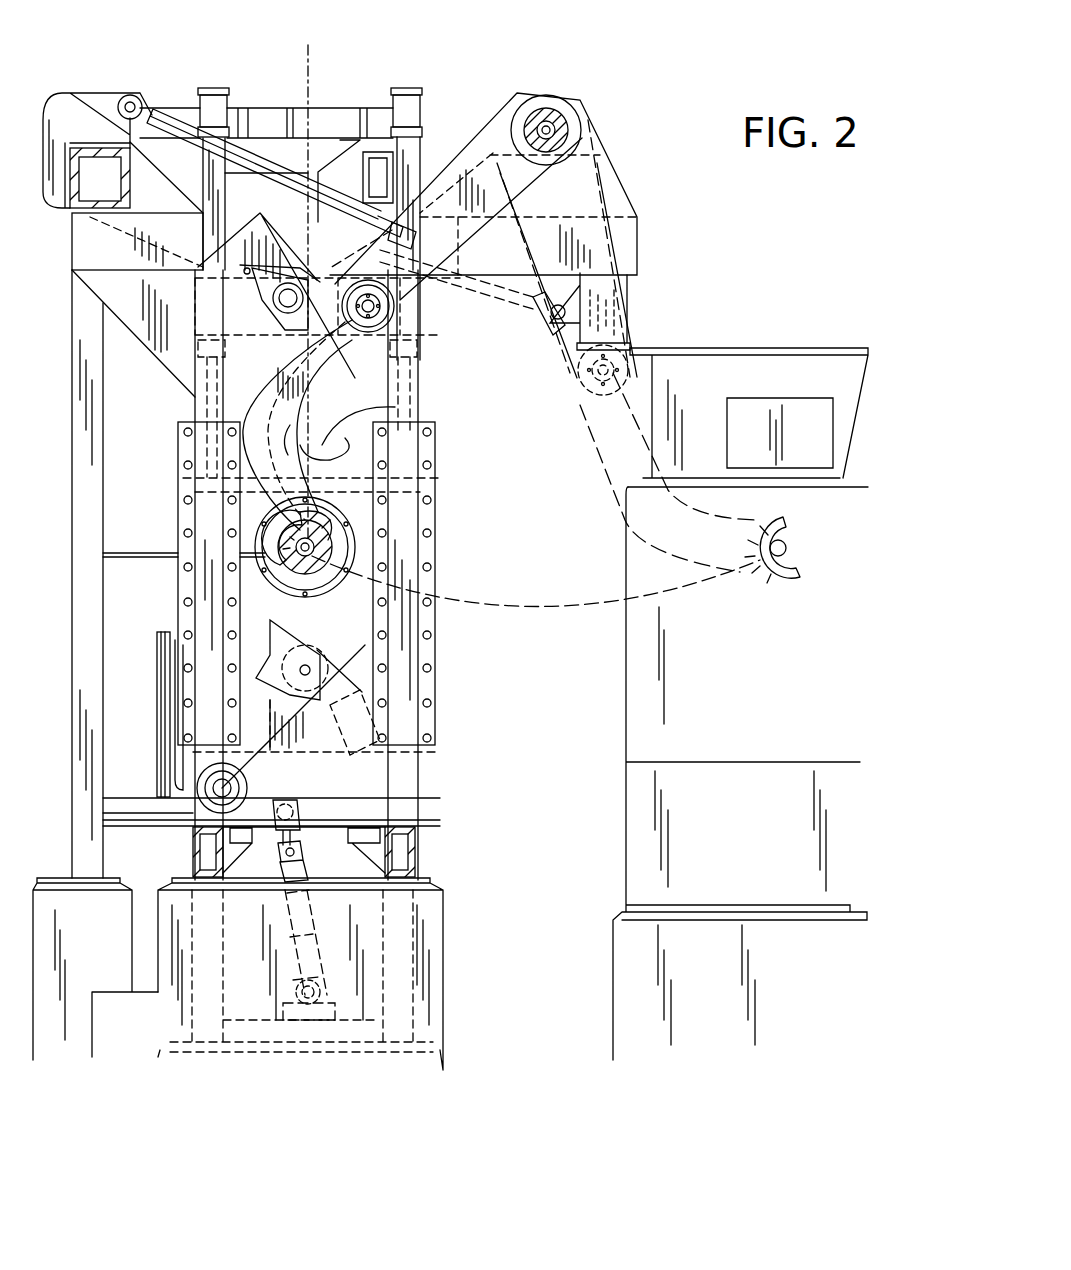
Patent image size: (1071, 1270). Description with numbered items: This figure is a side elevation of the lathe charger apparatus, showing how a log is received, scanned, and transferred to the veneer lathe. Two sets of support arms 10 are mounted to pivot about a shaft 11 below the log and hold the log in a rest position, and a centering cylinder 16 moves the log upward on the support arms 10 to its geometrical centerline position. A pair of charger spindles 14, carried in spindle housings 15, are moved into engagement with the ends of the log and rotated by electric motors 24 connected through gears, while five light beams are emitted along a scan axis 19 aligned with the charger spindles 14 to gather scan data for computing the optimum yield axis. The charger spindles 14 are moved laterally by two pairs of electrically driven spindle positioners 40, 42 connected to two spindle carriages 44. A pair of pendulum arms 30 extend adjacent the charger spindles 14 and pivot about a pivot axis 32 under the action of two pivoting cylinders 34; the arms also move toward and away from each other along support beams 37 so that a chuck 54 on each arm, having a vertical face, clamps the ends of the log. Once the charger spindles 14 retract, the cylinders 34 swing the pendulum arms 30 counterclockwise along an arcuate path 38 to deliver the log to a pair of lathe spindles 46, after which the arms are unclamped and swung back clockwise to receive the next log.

The support arms 10 is at (278, 668).
The shaft 11 is at (222, 790).
The charger spindles 14 is at (309, 590).
The spindle housings 15 is at (338, 586).
The centering cylinder 16 is at (302, 867).
The scan axis 19 is at (312, 97).
The electric motors 24 is at (395, 407).
The pendulum arms 30 is at (318, 398).
The pivot axis 32 is at (548, 130).
The actuating cylinders 34 is at (184, 128).
The support beams 37 is at (396, 294).
The arcuate path 38 is at (538, 610).
The spindle positioners 40 is at (414, 160).
The spindle positioners 42 is at (204, 190).
The spindle carriages 44 is at (316, 442).
The lathe spindles 46 is at (786, 548).
The chuck 54 is at (312, 546).